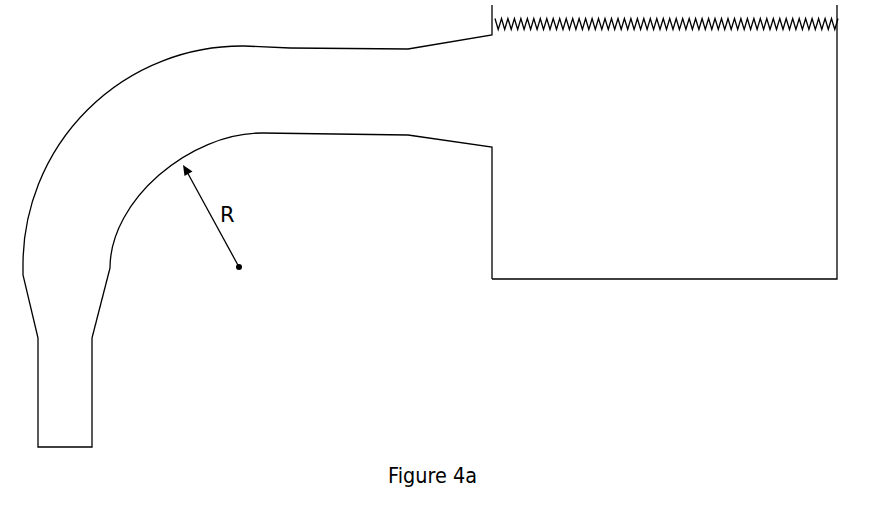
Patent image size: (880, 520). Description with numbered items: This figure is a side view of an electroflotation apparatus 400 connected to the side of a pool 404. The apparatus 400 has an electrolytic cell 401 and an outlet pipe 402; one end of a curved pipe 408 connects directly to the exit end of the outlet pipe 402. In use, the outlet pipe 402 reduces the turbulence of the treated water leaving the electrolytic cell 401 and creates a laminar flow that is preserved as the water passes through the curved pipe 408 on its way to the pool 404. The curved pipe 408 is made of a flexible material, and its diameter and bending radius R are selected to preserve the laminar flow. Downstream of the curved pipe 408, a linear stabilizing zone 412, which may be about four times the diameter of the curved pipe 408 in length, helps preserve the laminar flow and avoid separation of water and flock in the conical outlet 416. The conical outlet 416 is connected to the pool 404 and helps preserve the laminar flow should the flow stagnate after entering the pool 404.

The electroflotation apparatus 400 is at (172, 283).
The electrolytic cell 401 is at (73, 415).
The outlet pipe 402 is at (72, 312).
The pool 404 is at (646, 208).
The curved pipe 408 is at (173, 125).
The linear stabilizing zone 412 is at (332, 118).
The conical outlet 416 is at (452, 113).